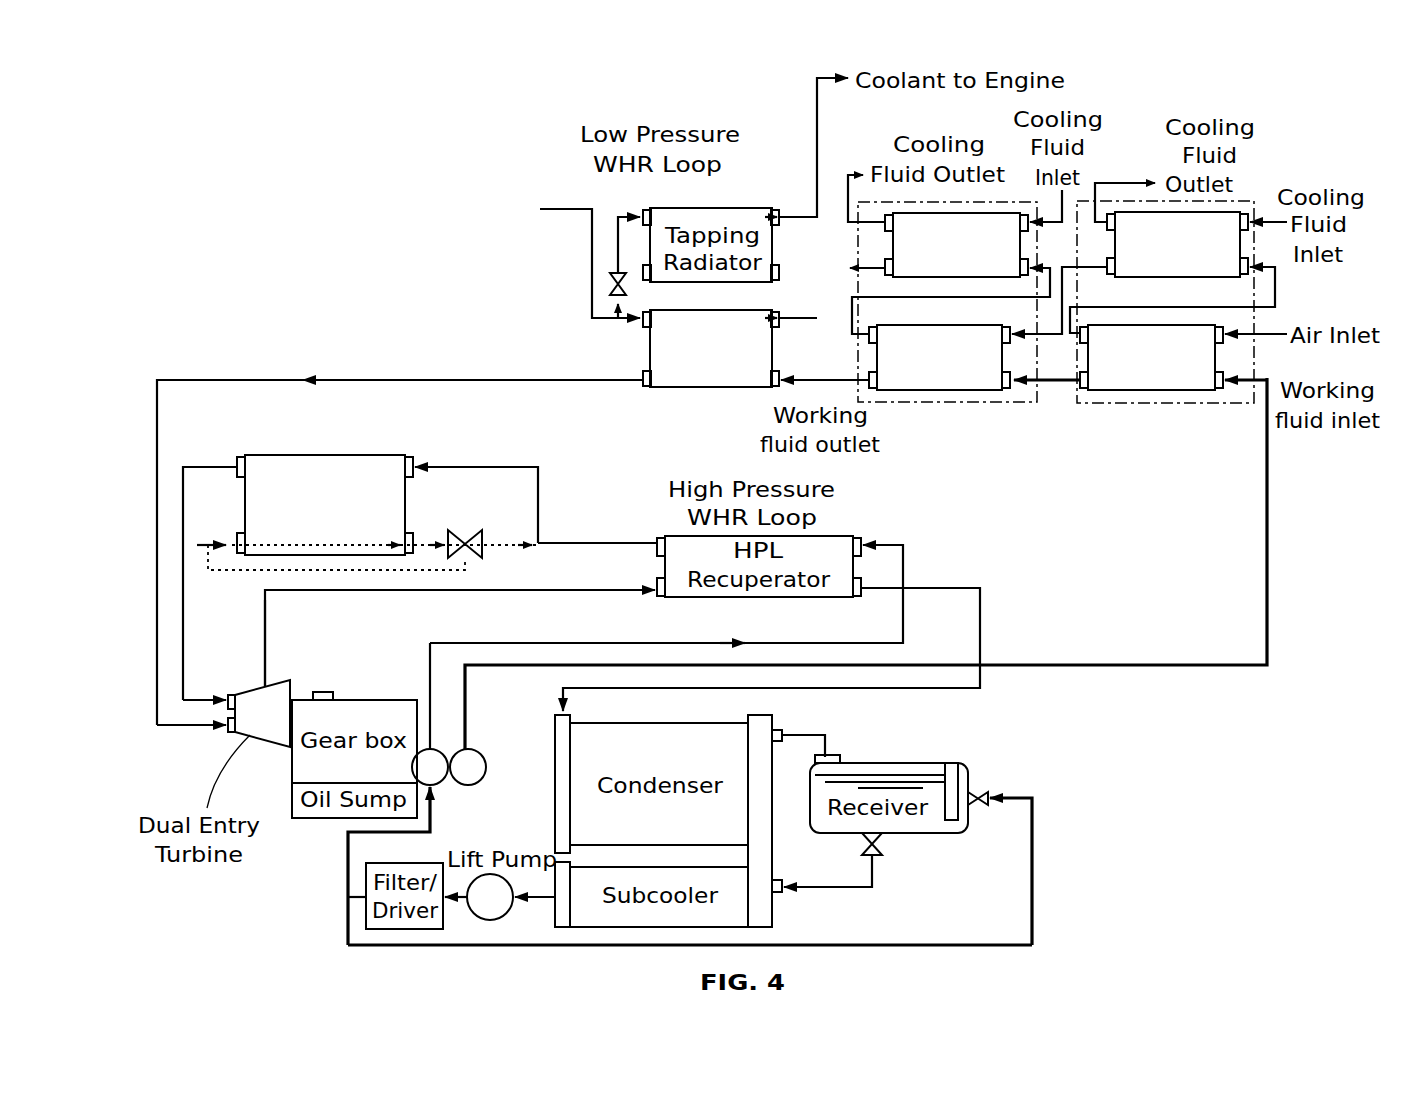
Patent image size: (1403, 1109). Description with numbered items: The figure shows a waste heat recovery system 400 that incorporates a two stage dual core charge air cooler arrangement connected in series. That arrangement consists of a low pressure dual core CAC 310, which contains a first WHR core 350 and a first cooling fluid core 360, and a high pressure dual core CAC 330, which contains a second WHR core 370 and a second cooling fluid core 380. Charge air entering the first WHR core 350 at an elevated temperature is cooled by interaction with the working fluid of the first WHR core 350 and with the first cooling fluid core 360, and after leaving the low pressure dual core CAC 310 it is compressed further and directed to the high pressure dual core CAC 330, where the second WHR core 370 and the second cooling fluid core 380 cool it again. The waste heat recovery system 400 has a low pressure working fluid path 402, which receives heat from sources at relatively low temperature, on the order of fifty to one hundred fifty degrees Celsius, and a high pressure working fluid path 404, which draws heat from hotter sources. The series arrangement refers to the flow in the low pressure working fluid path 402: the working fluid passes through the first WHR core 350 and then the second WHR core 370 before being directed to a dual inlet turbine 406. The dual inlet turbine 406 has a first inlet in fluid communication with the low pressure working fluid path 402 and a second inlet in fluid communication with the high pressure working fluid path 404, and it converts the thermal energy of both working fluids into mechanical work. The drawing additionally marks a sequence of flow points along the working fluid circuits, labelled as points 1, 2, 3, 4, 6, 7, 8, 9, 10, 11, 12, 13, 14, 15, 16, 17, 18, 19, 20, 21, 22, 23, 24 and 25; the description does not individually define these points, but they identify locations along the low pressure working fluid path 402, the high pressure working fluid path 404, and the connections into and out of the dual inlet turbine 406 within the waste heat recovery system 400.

The WHR system 400 is at (284, 274).
The low pressure dual core CAC 310 is at (1197, 274).
The high pressure dual core CAC 330 is at (977, 316).
The first WHR core 350 is at (1151, 357).
The first cooling fluid core 360 is at (1177, 244).
The second WHR core 370 is at (939, 357).
The second cooling fluid core 380 is at (956, 245).
The low pressure working fluid path 402 is at (1267, 508).
The high pressure working fluid path 404 is at (186, 576).
The dual inlet turbine 406 is at (273, 733).
The high pressure pump 1 is at (470, 752).
The low pressure pump 2 is at (430, 714).
The working fluid line between condensers 3 is at (1047, 403).
The recuperator hot side inlet line 4 is at (678, 590).
The coolant boiler working fluid inlet 6 is at (805, 389).
The coolant boiler 7 is at (711, 358).
The coolant boiler working fluid outlet 8 is at (605, 389).
The low pressure vapor line 9 is at (480, 393).
The low pressure vapor line to turbine 10 is at (278, 393).
The low pressure turbine inlet line 11 is at (138, 552).
The low pressure turbine inlet 12 is at (191, 741).
The turbine exhaust line 13 is at (303, 637).
The recuperator cold side inlet 14 is at (465, 598).
The recuperator outlet 15 is at (916, 604).
The condenser inlet line 16 is at (771, 649).
The condenser inlet header 17 is at (590, 775).
The condenser outlet header 18 is at (743, 812).
The subcooler outlet line 19 is at (500, 903).
The recuperator hot side outlet 20 is at (632, 537).
The high pressure working fluid line 21 is at (569, 530).
The tailpipe exhaust boiler inlet line 22 is at (491, 505).
The tailpipe exhaust boiler inlet 23 is at (409, 453).
The tailpipe exhaust boiler outlet 24 is at (233, 565).
The high pressure turbine inlet 25 is at (204, 685).